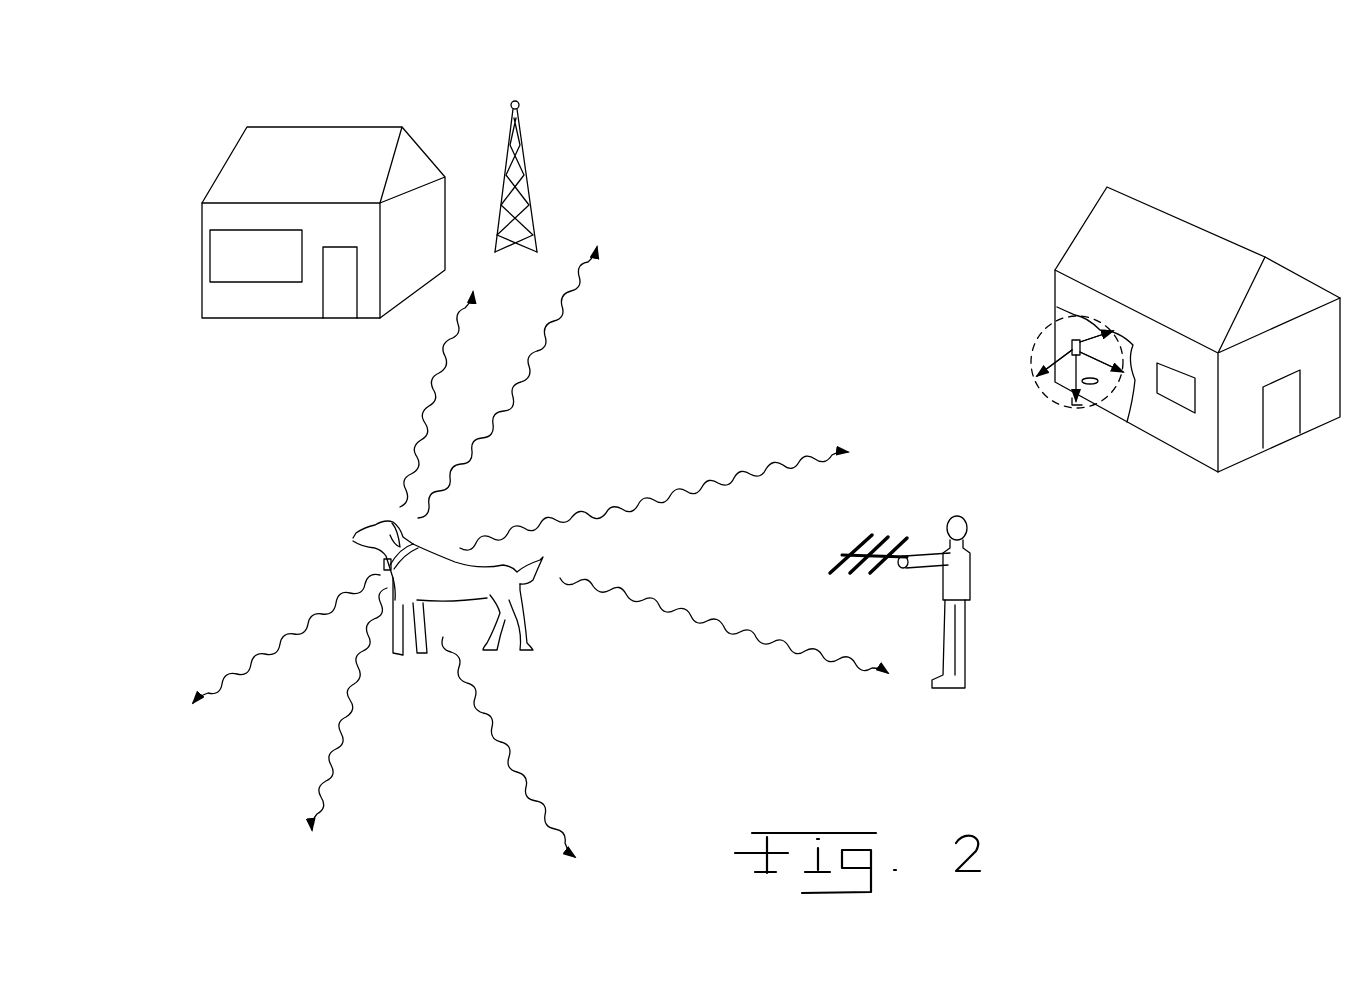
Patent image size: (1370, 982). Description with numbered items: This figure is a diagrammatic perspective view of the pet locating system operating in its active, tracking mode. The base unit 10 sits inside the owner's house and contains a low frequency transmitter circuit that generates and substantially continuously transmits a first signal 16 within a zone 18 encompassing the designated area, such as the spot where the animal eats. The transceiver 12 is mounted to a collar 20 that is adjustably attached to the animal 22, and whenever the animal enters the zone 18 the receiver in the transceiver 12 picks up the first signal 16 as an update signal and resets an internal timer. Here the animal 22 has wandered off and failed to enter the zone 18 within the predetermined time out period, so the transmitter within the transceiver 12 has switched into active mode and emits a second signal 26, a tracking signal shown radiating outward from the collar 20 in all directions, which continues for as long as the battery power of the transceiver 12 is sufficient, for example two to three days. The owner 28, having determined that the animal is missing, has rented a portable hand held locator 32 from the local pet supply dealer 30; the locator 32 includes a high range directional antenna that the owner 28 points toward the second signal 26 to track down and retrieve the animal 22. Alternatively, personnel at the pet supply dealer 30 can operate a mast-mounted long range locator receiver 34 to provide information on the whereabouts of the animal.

The base unit 10 is at (1066, 333).
The transceiver 12 is at (384, 564).
The first signal 16 is at (1043, 350).
The zone 18 is at (1156, 329).
The collar 20 is at (413, 543).
The animal 22 is at (533, 640).
The second signal 26 is at (643, 505).
The owner 28 is at (962, 571).
The pet supply dealer 30 is at (327, 137).
The hand held locator 32 is at (890, 529).
The long range locator receiver 34 is at (521, 96).